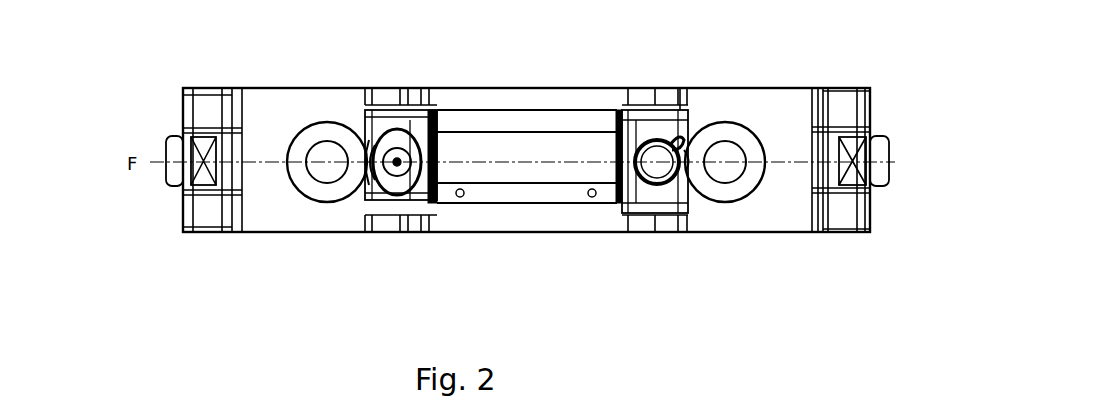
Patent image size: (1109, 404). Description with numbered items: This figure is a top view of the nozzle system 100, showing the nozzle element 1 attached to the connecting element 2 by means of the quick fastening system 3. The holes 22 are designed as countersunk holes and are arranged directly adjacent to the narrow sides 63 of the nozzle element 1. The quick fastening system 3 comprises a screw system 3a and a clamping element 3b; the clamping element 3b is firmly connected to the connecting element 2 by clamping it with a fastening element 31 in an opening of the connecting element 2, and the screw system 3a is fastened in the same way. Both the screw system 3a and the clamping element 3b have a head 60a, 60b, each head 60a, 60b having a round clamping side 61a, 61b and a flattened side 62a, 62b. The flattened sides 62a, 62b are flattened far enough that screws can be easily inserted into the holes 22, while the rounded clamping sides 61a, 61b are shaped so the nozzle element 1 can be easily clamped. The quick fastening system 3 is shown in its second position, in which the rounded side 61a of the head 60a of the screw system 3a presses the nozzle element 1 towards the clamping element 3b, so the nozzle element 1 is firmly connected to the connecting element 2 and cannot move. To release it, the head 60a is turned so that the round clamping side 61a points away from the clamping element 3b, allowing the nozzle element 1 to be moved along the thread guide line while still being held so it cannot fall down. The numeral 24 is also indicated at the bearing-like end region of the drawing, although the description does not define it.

The nozzle system 100 is at (145, 77).
The nozzle element 1 is at (511, 238).
The connecting element 2 is at (768, 118).
The quick fastening system 3 is at (652, 84).
The screw system 3a is at (408, 115).
The clamping element 3b is at (665, 190).
The holes 22 is at (327, 118).
The bearing 24 is at (872, 190).
The fastening element 31 is at (680, 88).
The head 60a is at (388, 205).
The head 60b is at (647, 137).
The round clamping side 61a is at (410, 220).
The round clamping side 61b is at (640, 215).
The flattened side 62a is at (367, 177).
The flattened side 62b is at (690, 172).
The narrow sides 63 is at (358, 150).